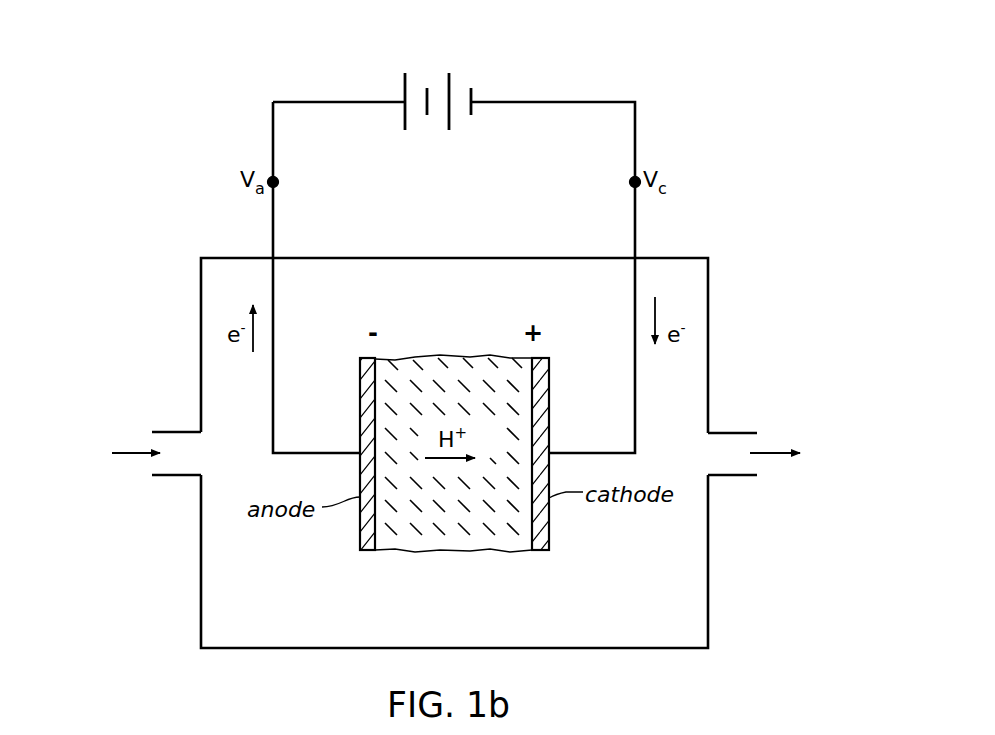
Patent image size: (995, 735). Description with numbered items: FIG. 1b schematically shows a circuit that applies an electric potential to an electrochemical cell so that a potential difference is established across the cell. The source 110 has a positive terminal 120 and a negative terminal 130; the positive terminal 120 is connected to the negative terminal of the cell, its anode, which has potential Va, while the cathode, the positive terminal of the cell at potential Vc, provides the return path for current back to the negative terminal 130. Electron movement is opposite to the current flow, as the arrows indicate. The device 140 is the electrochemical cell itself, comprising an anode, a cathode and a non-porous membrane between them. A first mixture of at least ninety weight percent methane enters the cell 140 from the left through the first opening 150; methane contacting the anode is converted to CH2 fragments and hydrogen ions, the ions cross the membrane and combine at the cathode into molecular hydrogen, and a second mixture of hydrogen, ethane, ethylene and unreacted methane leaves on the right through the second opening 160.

The source 110 is at (443, 88).
The positive terminal 120 is at (405, 118).
The negative terminal 130 is at (471, 108).
The electrochemical cell 140 is at (677, 258).
The first opening 150 is at (151, 468).
The second opening 160 is at (752, 465).